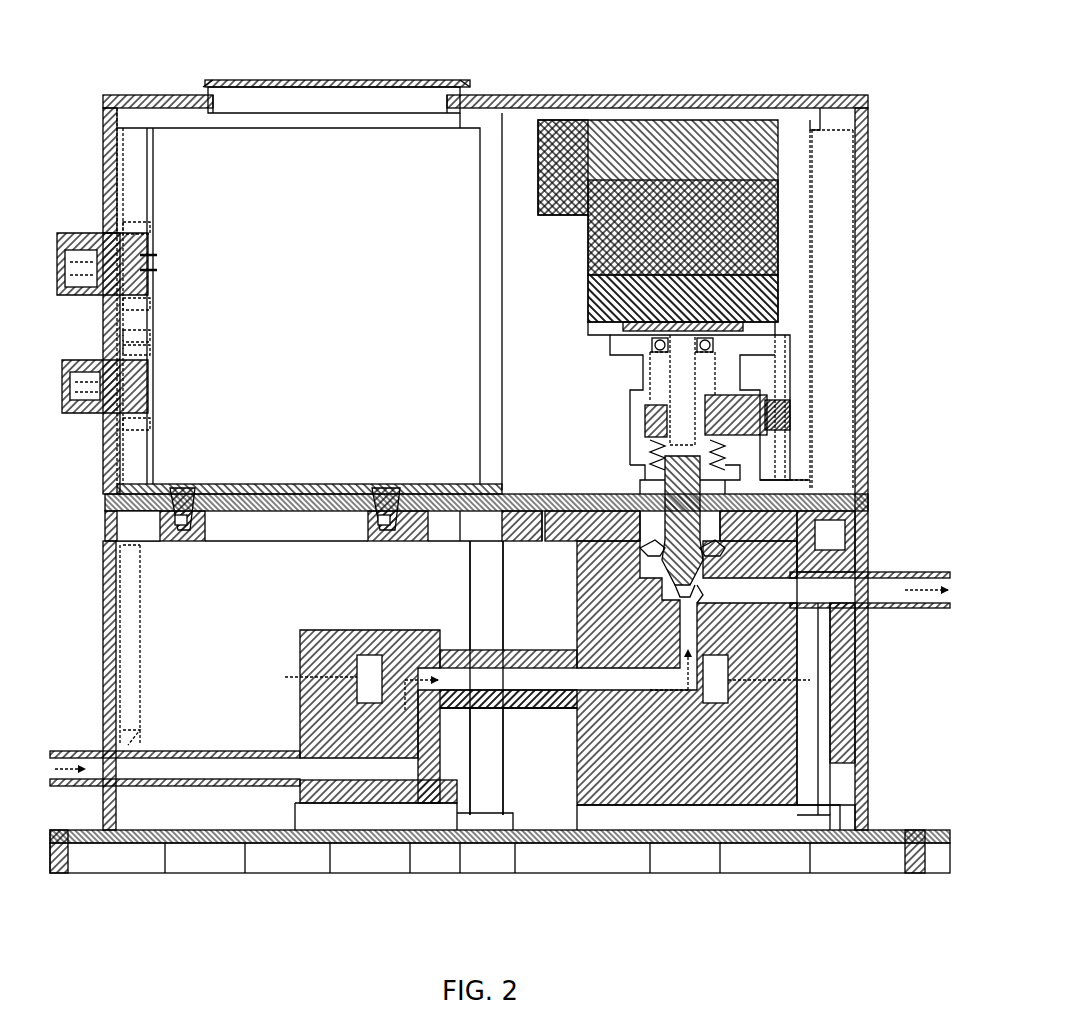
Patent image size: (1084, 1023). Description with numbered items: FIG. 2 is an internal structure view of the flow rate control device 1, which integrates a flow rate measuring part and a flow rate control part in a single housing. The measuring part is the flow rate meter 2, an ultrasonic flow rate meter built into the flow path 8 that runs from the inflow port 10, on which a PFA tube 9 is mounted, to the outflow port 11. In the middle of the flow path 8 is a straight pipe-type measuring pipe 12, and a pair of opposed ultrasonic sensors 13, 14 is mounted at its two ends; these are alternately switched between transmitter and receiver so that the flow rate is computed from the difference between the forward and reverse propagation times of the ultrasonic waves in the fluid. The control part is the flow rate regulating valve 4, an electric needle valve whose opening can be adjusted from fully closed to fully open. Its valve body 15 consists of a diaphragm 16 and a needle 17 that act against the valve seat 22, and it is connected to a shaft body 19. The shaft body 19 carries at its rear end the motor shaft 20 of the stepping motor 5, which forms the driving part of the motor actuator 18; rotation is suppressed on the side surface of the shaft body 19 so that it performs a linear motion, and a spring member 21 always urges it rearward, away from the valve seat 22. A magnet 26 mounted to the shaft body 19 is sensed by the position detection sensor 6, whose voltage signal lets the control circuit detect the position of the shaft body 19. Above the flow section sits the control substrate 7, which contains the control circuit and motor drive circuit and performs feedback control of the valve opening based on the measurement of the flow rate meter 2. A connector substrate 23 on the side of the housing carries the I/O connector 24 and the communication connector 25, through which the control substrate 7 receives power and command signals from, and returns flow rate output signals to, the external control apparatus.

The flow rate control device 1 is at (838, 62).
The flow rate meter 2 is at (282, 656).
The flow rate regulating valve 4 is at (704, 567).
The stepping motor 5 is at (588, 295).
The position detection sensor 6 is at (785, 373).
The control substrate 7 is at (190, 143).
The flow path 8 is at (500, 680).
The PFA tube 9 is at (922, 572).
The inflow port 10 is at (103, 768).
The outflow port 11 is at (868, 590).
The measuring pipe 12 is at (528, 708).
The ultrasonic sensor 13 is at (368, 660).
The ultrasonic sensor 14 is at (728, 690).
The valve body 15 is at (529, 636).
The diaphragm 16 is at (653, 547).
The needle 17 is at (678, 597).
The motor actuator 18 is at (690, 125).
The shaft body 19 is at (645, 420).
The motor shaft 20 is at (660, 393).
The spring member 21 is at (650, 460).
The valve seat 22 is at (698, 585).
The connector substrate 23 is at (145, 180).
The I/O connector 24 is at (100, 238).
The communication connector 25 is at (100, 360).
The magnet 26 is at (790, 413).